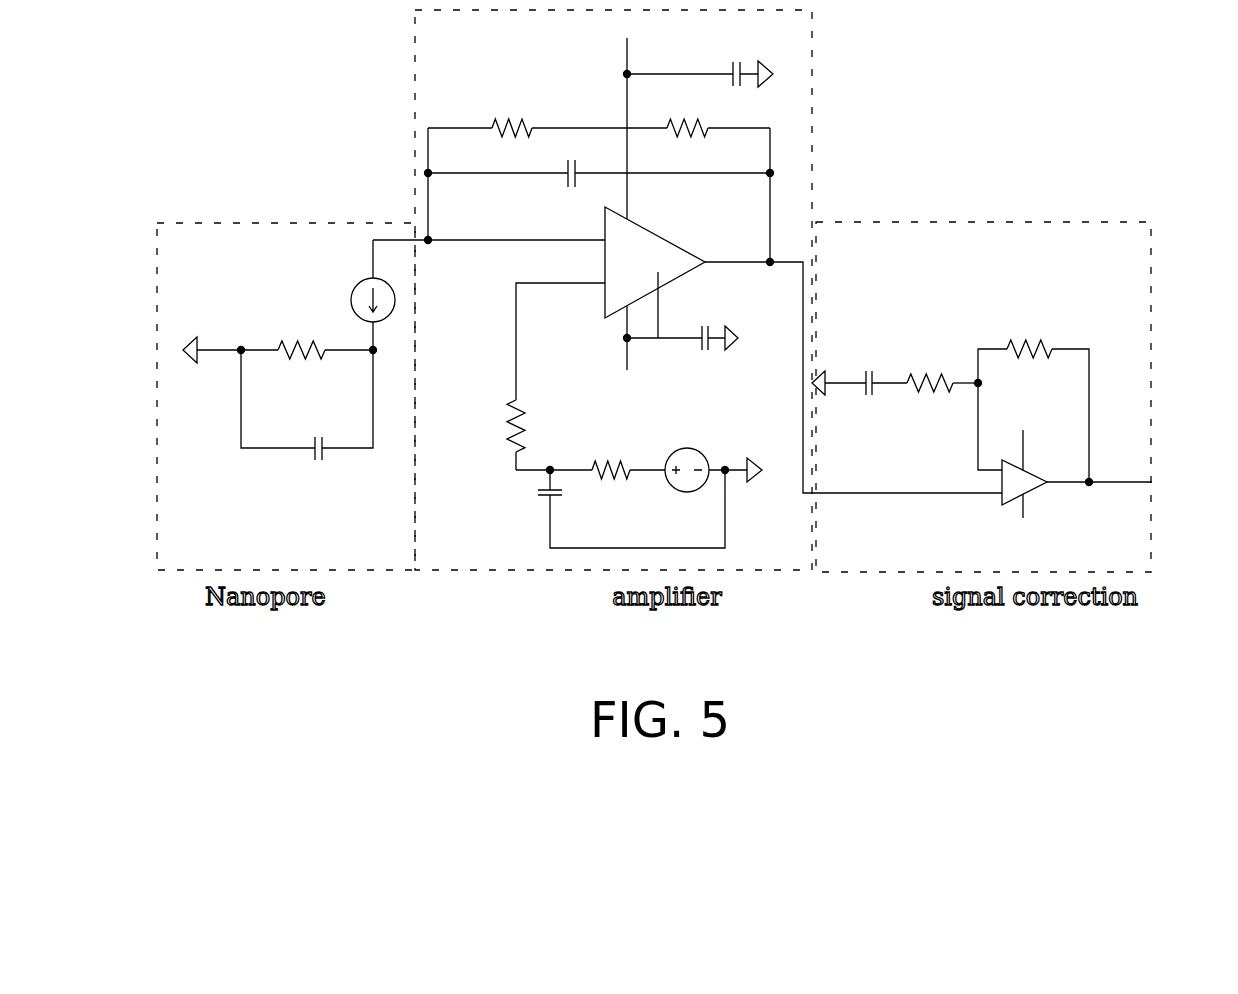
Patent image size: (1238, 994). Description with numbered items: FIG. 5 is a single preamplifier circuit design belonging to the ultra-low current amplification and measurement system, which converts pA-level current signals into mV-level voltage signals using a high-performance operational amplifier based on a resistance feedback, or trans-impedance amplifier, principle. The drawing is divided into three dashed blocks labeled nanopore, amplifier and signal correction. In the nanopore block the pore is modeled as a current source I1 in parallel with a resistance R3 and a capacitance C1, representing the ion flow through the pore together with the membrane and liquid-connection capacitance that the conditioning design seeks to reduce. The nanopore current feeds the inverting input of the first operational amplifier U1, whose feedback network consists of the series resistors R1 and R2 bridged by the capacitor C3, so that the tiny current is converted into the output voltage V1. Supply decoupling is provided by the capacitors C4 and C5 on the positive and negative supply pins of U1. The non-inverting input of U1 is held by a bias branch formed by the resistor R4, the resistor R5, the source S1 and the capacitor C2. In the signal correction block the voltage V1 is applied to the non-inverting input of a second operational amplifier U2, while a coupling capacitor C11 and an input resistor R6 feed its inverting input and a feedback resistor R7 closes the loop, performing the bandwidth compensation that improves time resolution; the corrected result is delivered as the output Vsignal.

The nanopore current source I1 is at (376, 295).
The nanopore resistance R3 is at (278, 344).
The nanopore capacitance C1 is at (307, 405).
The feedback resistor R1 is at (527, 119).
The feedback resistor R2 is at (698, 119).
The feedback capacitor C3 is at (599, 166).
The supply decoupling capacitor C4 is at (700, 67).
The supply decoupling capacitor C5 is at (682, 350).
The amplifier op-amp U1 is at (655, 201).
The resistor R4 is at (543, 376).
The resistor R5 is at (590, 461).
The voltage source S1 is at (713, 460).
The capacitor C2 is at (631, 509).
The amplifier output voltage V1 is at (853, 369).
The coupling capacitor C11 is at (859, 374).
The input resistor R6 is at (942, 373).
The feedback resistor R7 is at (1033, 401).
The signal correction op-amp U2 is at (1045, 474).
The output signal voltage Vsignal is at (1148, 485).